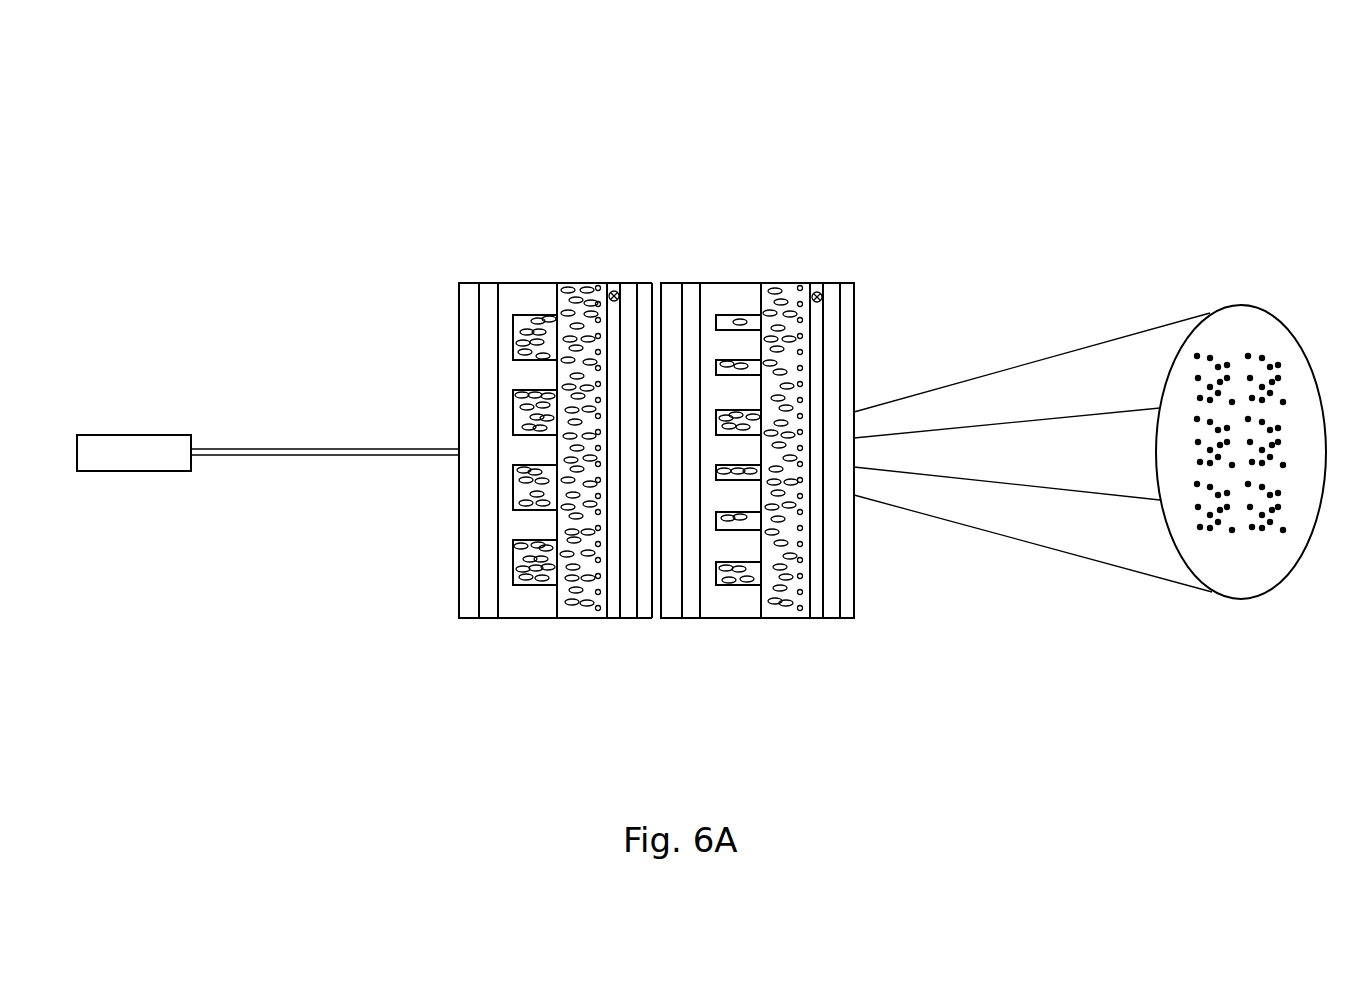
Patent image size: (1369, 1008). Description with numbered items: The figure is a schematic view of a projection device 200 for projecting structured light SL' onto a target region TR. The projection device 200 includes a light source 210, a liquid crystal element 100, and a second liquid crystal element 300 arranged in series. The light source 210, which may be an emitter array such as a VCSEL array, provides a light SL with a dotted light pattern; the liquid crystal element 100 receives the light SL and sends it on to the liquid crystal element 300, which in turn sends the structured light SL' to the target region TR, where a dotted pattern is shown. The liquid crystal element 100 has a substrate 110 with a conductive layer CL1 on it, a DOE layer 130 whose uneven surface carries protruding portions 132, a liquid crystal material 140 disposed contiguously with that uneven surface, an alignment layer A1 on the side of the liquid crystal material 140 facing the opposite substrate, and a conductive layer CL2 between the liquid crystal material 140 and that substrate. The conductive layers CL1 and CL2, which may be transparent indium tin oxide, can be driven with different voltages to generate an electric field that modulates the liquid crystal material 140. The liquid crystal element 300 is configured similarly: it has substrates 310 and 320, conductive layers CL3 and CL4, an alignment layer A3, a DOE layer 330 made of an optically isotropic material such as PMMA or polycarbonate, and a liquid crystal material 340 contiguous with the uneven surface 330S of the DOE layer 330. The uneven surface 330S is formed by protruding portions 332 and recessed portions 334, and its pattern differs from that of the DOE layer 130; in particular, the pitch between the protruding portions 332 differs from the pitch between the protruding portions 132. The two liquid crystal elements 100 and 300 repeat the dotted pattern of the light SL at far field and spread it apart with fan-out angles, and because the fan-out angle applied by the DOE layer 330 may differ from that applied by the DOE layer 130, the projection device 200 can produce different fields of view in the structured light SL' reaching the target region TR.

The projection device 200 is at (139, 167).
The liquid crystal element 100 is at (511, 160).
The liquid crystal element 300 is at (759, 160).
The substrate 110 is at (470, 281).
The conductive layer CL1 is at (487, 282).
The DOE layer 130 is at (527, 282).
The protruding portions 132 is at (533, 528).
The liquid crystal material 140 is at (582, 282).
The alignment layer A1 is at (612, 282).
The conductive layer CL2 is at (627, 281).
The light source 210 is at (141, 450).
The light SL is at (325, 412).
The structured light SL' is at (1033, 439).
The target region TR is at (1248, 305).
The substrate 310 is at (673, 612).
The conductive layer CL3 is at (693, 608).
The DOE layer 330 is at (733, 608).
The uneven surface 330S is at (770, 282).
The protruding portions 332 is at (745, 548).
The recessed portions 334 is at (708, 518).
The liquid crystal material 340 is at (787, 608).
The alignment layer A3 is at (812, 612).
The conductive layer CL4 is at (830, 612).
The substrate 320 is at (848, 613).